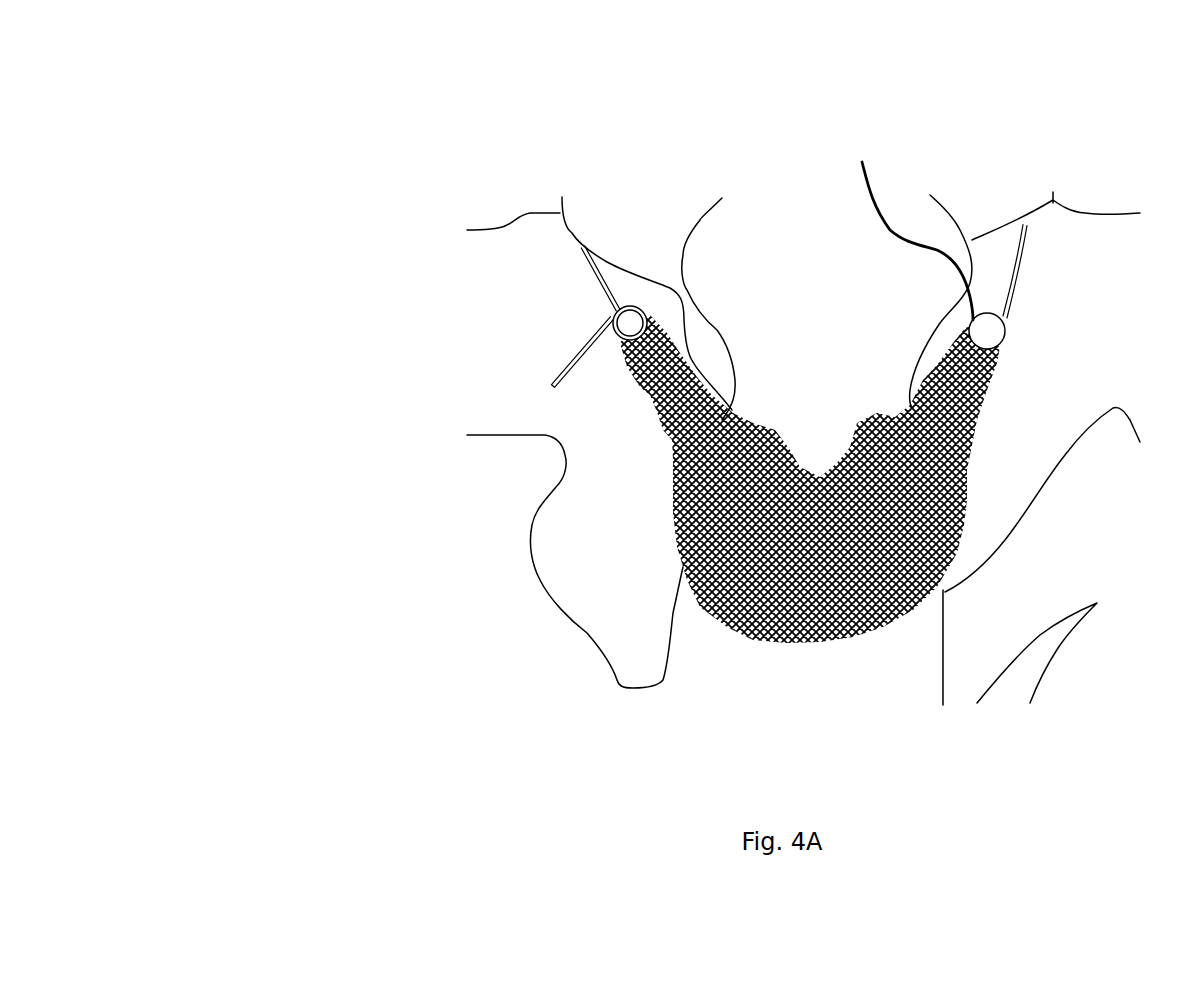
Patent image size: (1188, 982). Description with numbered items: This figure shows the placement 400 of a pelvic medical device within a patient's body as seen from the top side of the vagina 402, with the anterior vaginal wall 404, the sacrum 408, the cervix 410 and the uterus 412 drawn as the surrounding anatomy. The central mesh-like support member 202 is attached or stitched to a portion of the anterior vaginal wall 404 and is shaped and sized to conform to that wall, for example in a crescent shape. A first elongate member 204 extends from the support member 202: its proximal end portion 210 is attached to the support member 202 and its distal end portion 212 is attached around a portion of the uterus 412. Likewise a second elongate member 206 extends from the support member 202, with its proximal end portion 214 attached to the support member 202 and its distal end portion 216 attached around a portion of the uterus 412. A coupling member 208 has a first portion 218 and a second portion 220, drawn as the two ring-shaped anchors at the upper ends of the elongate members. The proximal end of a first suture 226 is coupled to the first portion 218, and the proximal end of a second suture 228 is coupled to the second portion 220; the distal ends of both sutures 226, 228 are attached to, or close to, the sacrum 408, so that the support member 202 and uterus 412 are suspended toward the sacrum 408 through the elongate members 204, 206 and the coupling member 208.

The implant system 400 is at (272, 108).
The support member 202 is at (895, 600).
The first elongate member 204 is at (647, 398).
The second elongate member 206 is at (952, 438).
The coupling member 208 is at (899, 227).
The proximal end portion 210 is at (680, 425).
The distal end portion 212 is at (622, 353).
The proximal end portion 214 is at (977, 425).
The distal end portion 216 is at (1000, 360).
The first portion 218 is at (630, 320).
The second portion 220 is at (993, 328).
The first suture 226 is at (598, 267).
The second suture 228 is at (1013, 275).
The vagina 402 is at (747, 680).
The anterior vaginal wall 404 is at (680, 608).
The sacrum 408 is at (585, 246).
The cervix 410 is at (733, 372).
The uterus 412 is at (947, 210).